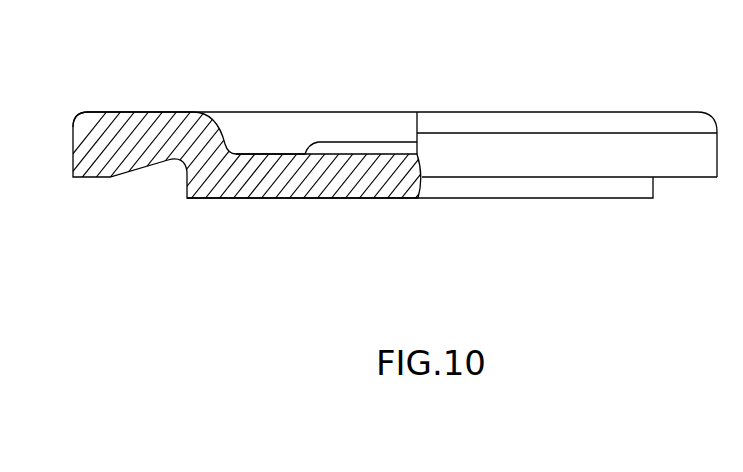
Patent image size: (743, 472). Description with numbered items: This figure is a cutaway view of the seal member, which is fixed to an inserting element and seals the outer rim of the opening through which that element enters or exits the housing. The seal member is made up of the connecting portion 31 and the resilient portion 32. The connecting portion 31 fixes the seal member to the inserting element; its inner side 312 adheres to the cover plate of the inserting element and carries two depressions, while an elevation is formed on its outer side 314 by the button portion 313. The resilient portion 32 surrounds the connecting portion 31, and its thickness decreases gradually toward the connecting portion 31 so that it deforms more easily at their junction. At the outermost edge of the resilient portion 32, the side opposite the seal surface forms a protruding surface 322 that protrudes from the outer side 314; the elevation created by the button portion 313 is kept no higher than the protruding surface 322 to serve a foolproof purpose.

The connecting portion 31 is at (503, 188).
The resilient portion 32 is at (535, 147).
The inner side 312 is at (293, 199).
The button portion 313 is at (365, 142).
The outer side 314 is at (270, 155).
The protruding surface 322 is at (140, 112).